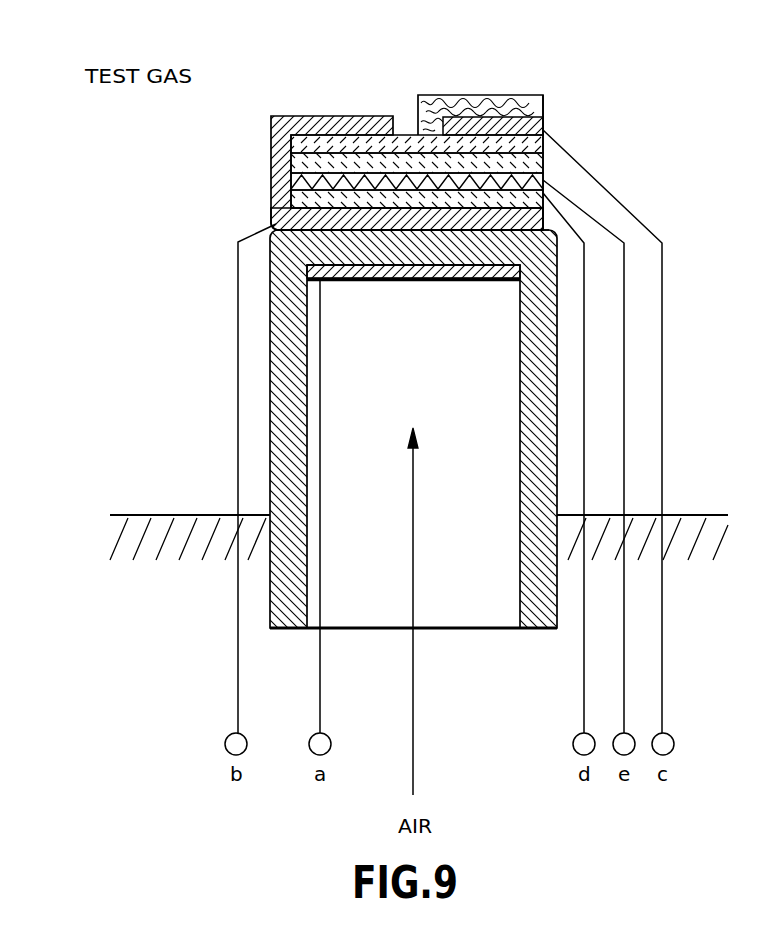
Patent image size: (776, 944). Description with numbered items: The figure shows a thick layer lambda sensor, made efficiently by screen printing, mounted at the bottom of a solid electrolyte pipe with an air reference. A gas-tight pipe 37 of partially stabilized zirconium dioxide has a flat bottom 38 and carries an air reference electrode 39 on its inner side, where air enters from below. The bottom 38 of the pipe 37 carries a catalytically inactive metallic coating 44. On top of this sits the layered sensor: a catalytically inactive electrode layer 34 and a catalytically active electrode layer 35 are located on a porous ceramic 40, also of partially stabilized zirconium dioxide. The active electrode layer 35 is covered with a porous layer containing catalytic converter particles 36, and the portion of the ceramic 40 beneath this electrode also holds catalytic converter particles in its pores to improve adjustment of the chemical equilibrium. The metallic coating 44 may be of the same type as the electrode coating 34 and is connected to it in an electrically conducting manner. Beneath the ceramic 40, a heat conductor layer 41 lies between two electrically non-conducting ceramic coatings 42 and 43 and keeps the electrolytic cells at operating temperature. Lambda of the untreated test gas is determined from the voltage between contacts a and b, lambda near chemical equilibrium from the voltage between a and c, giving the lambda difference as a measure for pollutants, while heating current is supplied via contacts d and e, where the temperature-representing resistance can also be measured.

The catalytically inactive electrode layer 34 is at (308, 126).
The catalytically active electrode layer 35 is at (533, 114).
The porous layer containing catalytic converter particles 36 is at (527, 100).
The gas-tight pipe 37 is at (275, 425).
The flat bottom 38 is at (350, 243).
The air reference electrode 39 is at (393, 270).
The porous ceramic 40 is at (523, 148).
The heat conductor layer 41 is at (545, 193).
The electrically non-conducting ceramic coating 42 is at (602, 431).
The electrically non-conducting ceramic coating 43 is at (573, 230).
The catalytically inactive metallic coating 44 is at (297, 218).